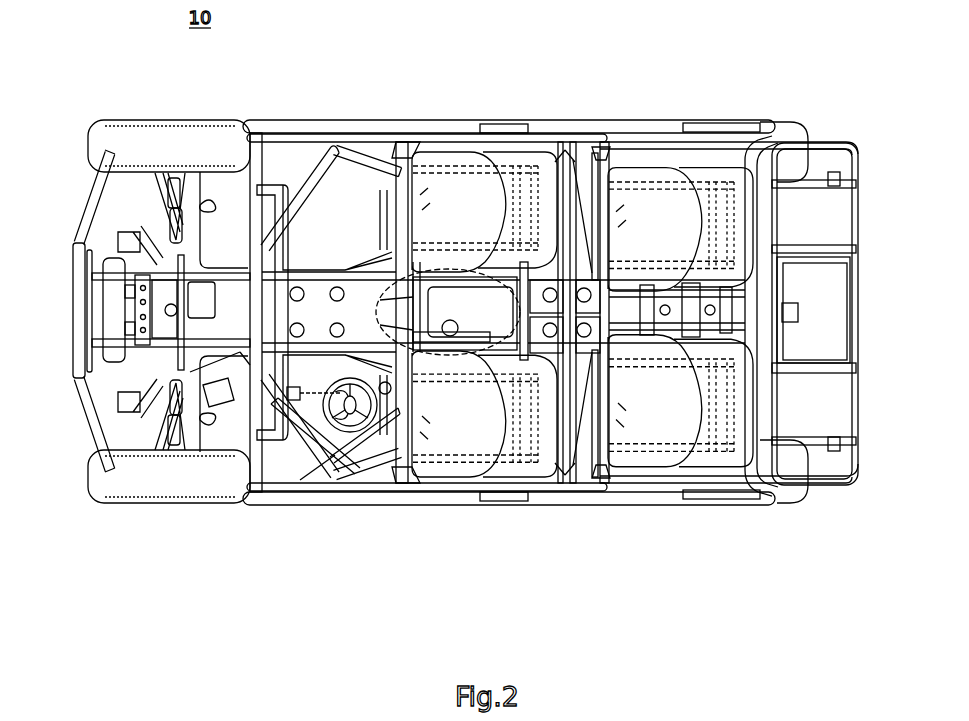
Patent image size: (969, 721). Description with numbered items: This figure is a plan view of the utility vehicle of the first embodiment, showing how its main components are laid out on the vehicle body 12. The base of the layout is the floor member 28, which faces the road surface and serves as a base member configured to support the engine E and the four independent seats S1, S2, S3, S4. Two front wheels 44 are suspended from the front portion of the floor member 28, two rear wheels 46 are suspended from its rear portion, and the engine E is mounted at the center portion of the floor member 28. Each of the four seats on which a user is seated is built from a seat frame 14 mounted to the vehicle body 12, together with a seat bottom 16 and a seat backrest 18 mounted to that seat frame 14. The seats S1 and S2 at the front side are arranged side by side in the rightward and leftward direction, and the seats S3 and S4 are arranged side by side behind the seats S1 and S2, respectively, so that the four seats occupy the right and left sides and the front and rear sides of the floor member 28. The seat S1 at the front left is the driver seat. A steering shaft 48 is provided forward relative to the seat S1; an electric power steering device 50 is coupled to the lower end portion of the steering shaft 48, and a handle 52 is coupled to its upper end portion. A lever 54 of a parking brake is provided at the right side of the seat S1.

The vehicle body 12 is at (350, 114).
The seat frame 14 is at (528, 163).
The seat bottom 16 is at (468, 192).
The seat backrest 18 is at (514, 183).
The floor member 28 is at (306, 168).
The front wheel 44 is at (170, 138).
The rear wheel 46 is at (778, 124).
The steering shaft 48 is at (323, 413).
The electric power steering device 50 is at (222, 390).
The handle 52 is at (338, 443).
The lever of a parking brake 54 is at (378, 422).
The engine E is at (450, 262).
The seat S1 is at (458, 425).
The seat S2 is at (455, 196).
The seat S3 is at (647, 403).
The seat S4 is at (645, 212).